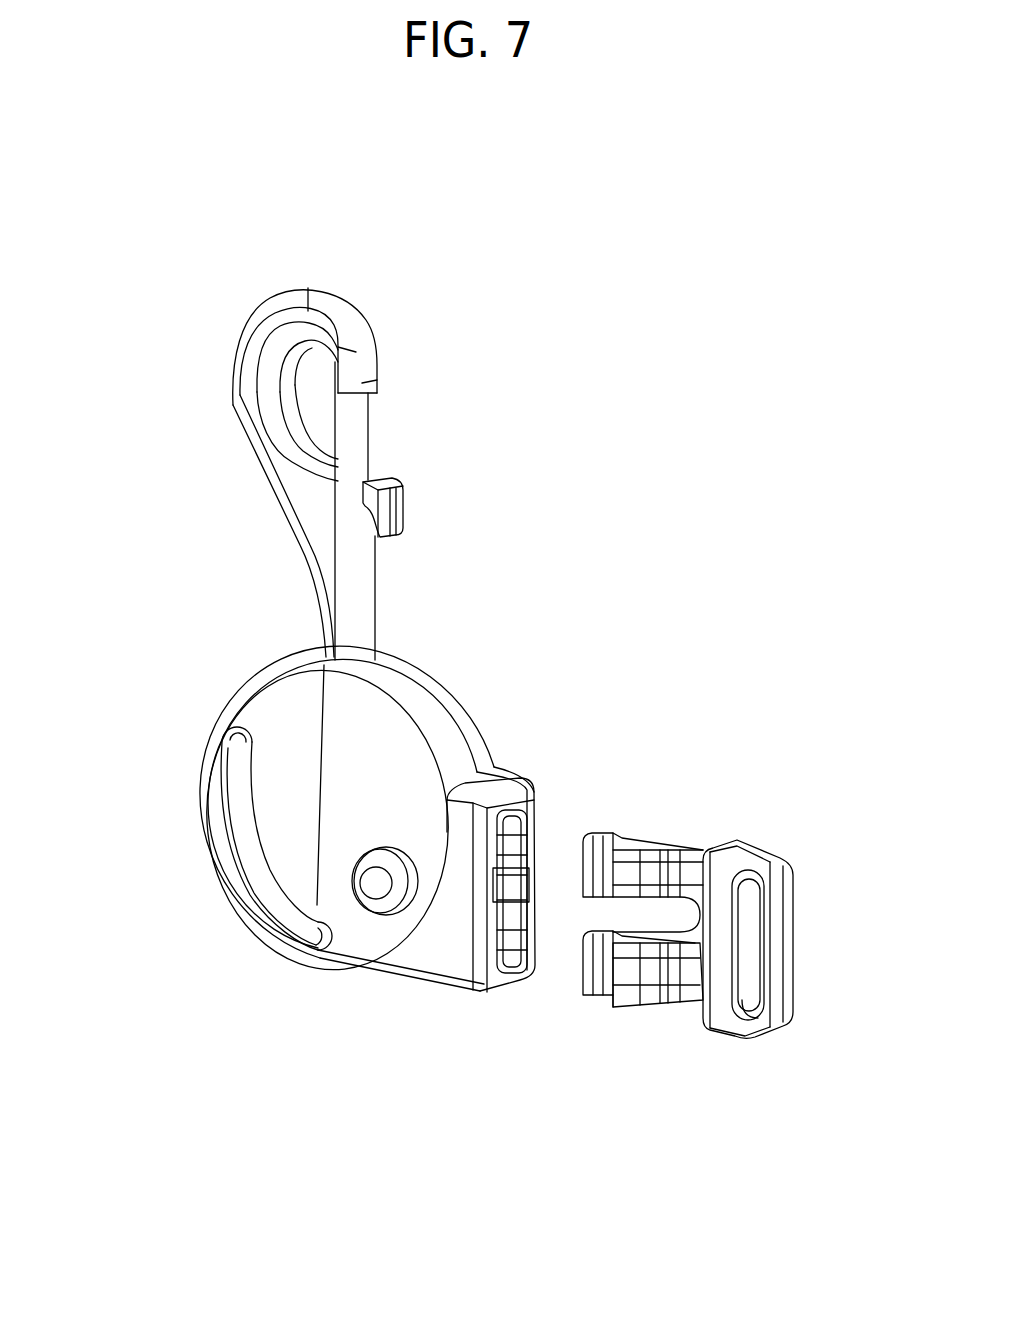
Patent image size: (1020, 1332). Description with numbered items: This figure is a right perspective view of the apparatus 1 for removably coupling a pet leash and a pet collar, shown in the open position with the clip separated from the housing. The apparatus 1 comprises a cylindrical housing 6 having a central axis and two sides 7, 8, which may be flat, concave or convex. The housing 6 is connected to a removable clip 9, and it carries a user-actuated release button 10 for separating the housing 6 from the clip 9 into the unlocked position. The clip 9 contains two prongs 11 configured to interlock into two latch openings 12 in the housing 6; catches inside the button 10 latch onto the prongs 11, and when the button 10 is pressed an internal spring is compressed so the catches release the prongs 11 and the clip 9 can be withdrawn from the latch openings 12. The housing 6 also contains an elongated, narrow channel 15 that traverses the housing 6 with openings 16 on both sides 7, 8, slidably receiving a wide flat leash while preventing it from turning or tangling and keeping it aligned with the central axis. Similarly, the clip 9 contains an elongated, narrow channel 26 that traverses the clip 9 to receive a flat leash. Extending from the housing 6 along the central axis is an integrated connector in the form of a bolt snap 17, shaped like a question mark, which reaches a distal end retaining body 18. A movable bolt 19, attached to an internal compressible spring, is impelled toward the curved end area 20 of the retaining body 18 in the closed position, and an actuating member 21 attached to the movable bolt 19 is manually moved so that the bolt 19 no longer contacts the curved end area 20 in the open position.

The apparatus 1 is at (192, 1128).
The housing 6 is at (483, 730).
The side 7 is at (257, 705).
The side 8 is at (460, 693).
The clip 9 is at (797, 973).
The release button 10 is at (380, 900).
The prongs 11 is at (623, 990).
The latch openings 12 is at (517, 847).
The channel 15 is at (260, 882).
The openings 16 is at (287, 950).
The bolt snap 17 is at (312, 573).
The retaining body 18 is at (262, 356).
The movable bolt 19 is at (372, 452).
The curved end area 20 is at (373, 350).
The actuating member 21 is at (407, 513).
The channel 26 is at (750, 1003).